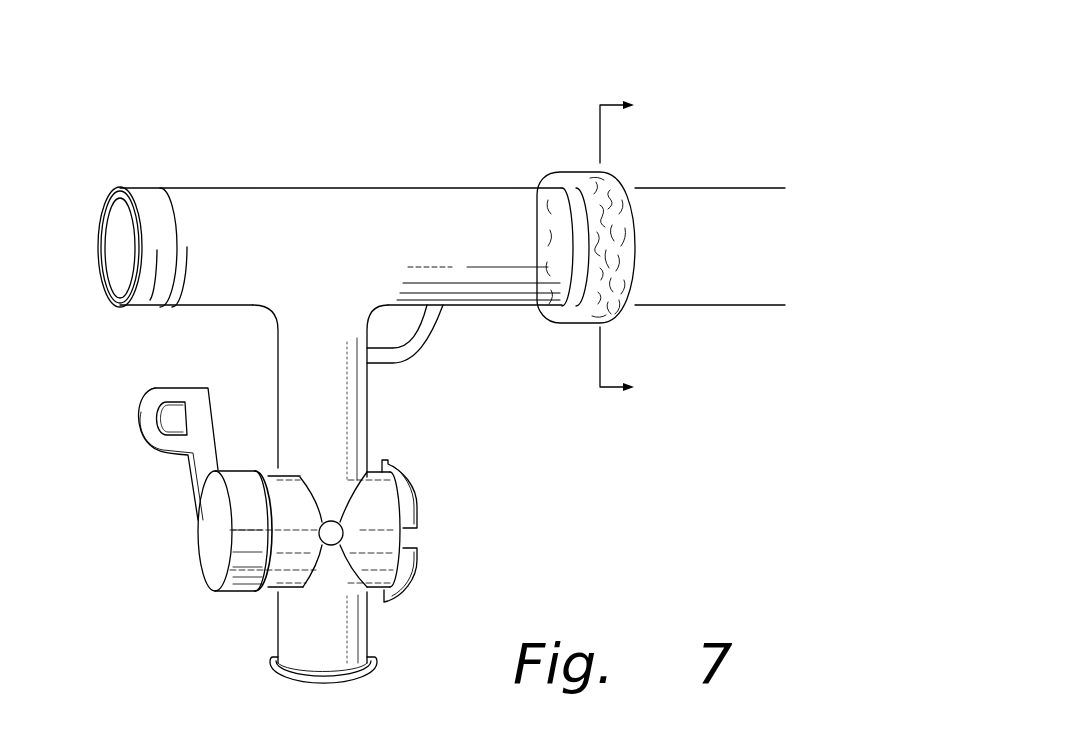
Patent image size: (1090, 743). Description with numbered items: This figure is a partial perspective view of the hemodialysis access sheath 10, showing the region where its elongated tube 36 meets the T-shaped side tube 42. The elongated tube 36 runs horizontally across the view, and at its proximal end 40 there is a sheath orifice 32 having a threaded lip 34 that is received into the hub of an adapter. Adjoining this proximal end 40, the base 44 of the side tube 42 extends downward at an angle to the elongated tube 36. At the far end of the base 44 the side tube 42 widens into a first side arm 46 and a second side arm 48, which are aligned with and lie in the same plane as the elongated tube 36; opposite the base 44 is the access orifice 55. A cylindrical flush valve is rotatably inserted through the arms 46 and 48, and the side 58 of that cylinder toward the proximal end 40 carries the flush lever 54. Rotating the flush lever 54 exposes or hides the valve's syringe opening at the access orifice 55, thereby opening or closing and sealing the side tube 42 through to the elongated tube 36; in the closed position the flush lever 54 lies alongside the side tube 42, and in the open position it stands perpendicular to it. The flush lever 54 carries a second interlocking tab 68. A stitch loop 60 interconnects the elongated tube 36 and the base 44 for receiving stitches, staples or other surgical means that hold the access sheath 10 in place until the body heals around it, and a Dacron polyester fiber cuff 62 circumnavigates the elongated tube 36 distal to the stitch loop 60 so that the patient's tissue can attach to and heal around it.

The hemodialysis access sheath 10 is at (487, 148).
The sheath orifice 32 is at (104, 207).
The threaded lip 34 is at (145, 308).
The elongated tube 36 is at (384, 255).
The proximal end 40 is at (168, 178).
The T-shaped side tube 42 is at (406, 417).
The base 44 is at (330, 318).
The first side arm 46 is at (312, 522).
The second side arm 48 is at (390, 520).
The flush lever 54 is at (218, 432).
The access orifice 55 is at (360, 682).
The side of the flush valve 58 is at (230, 544).
The stitch loop 60 is at (413, 357).
The Dacron polyester fiber cuff 62 is at (577, 322).
The second interlocking tab 68 is at (145, 420).